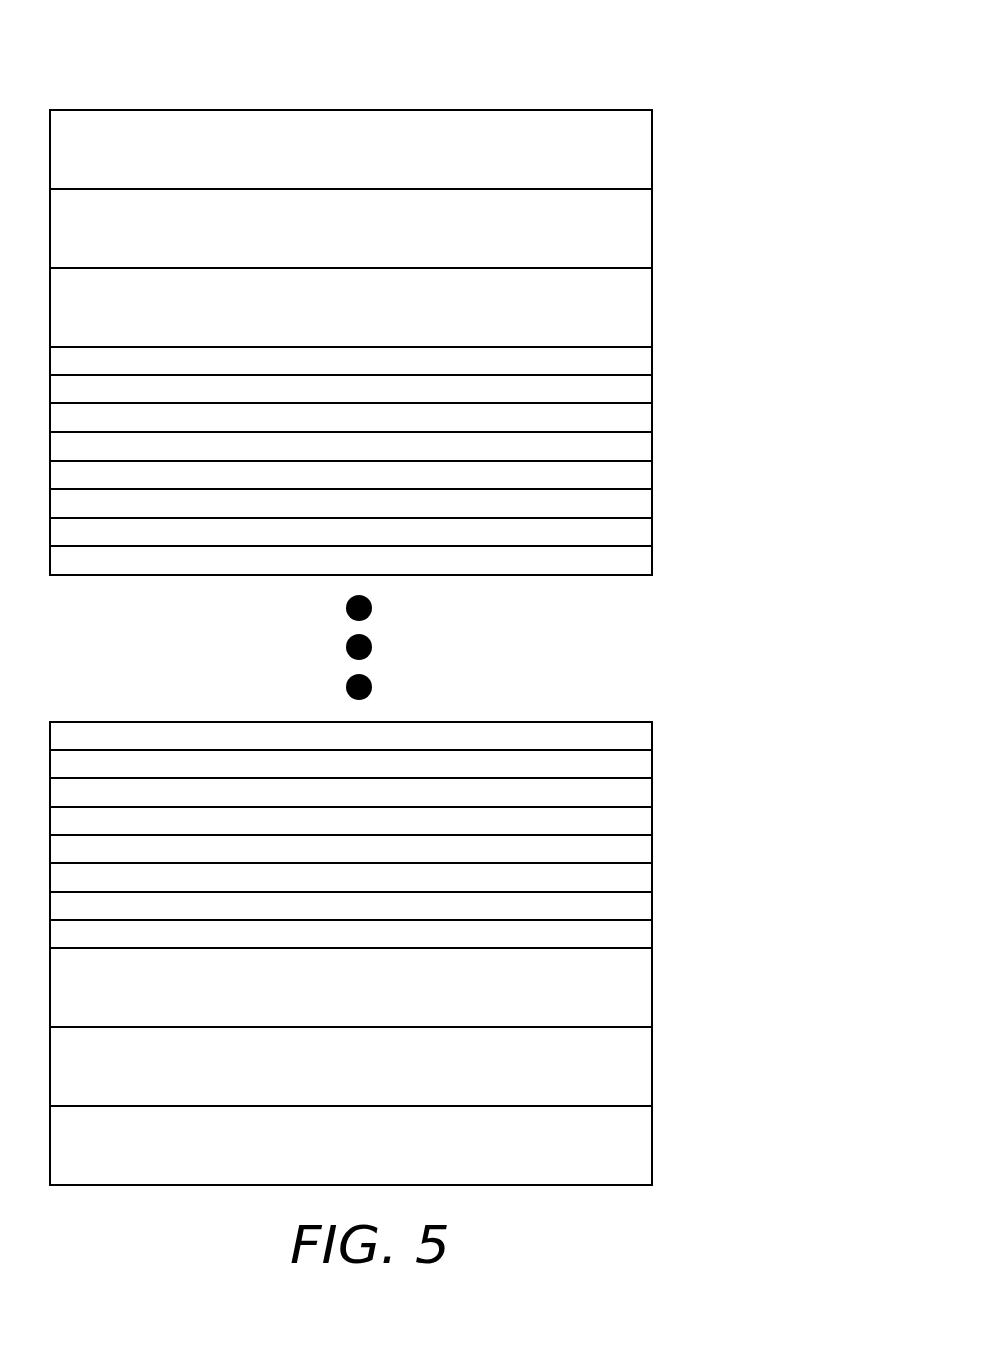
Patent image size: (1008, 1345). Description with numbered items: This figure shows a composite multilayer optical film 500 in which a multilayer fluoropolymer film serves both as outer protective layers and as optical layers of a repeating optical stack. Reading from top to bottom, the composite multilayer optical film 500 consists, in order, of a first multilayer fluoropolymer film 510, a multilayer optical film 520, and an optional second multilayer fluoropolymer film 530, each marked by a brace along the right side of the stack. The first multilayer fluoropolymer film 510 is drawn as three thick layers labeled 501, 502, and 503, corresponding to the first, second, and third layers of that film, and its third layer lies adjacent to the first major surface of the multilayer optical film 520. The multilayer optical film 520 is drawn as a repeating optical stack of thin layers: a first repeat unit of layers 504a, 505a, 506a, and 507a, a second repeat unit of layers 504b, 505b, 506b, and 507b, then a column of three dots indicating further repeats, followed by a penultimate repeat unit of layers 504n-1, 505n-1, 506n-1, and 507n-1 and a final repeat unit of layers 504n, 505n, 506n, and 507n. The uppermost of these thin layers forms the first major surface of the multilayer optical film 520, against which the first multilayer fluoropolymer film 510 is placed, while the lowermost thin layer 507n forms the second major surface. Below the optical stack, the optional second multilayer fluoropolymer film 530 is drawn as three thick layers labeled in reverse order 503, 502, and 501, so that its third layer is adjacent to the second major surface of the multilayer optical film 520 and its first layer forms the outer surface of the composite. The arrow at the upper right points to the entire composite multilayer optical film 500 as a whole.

The composite multilayer optical film 500 is at (627, 52).
The first layer 501 is at (636, 148).
The second layer 502 is at (636, 219).
The third layer 503 is at (636, 289).
The fourth layer of first repeat unit 504a is at (643, 361).
The fifth layer of first repeat unit 505a is at (643, 389).
The sixth layer of first repeat unit 506a is at (643, 418).
The seventh layer of first repeat unit 507a is at (643, 446).
The fourth layer of second repeat unit 504b is at (643, 475).
The fifth layer of second repeat unit 505b is at (643, 503).
The sixth layer of second repeat unit 506b is at (643, 532).
The seventh layer of second repeat unit 507b is at (643, 560).
The fourth layer of (n-1)th repeat unit 504n-1 is at (643, 736).
The fifth layer of (n-1)th repeat unit 505n-1 is at (643, 764).
The sixth layer of (n-1)th repeat unit 506n-1 is at (643, 792).
The seventh layer of (n-1)th repeat unit 507n-1 is at (643, 821).
The fourth layer of nth repeat unit 504n is at (643, 849).
The fifth layer of nth repeat unit 505n is at (643, 877).
The sixth layer of nth repeat unit 506n is at (643, 906).
The seventh layer of nth repeat unit 507n is at (643, 934).
The first multilayer fluoropolymer film 510 is at (796, 108).
The multilayer optical film 520 is at (796, 948).
The optional second multilayer fluoropolymer film 530 is at (796, 952).